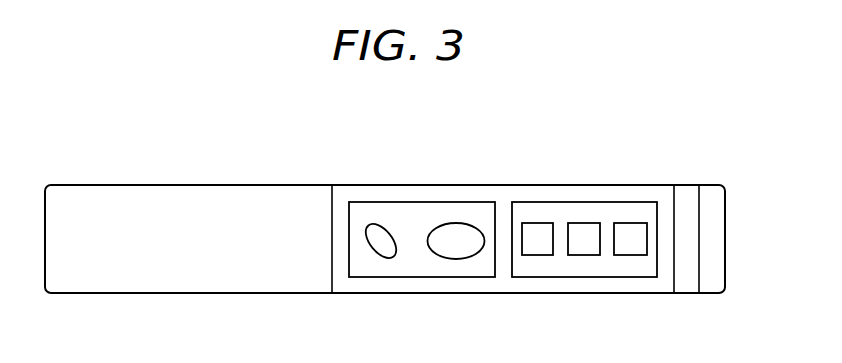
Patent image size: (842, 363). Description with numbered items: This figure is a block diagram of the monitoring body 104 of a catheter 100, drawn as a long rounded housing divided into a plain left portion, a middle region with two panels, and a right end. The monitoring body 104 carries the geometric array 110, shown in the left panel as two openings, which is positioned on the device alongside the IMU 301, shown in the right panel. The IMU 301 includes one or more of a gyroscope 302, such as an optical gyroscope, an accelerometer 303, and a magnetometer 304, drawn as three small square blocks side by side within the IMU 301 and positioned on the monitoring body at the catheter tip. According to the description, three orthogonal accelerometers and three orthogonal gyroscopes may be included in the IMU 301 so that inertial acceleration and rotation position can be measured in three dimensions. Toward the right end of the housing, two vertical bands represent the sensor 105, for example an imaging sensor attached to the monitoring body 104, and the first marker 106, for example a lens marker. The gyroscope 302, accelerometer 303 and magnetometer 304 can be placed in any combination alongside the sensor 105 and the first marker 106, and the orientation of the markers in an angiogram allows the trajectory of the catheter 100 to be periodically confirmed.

The catheter 100 is at (188, 122).
The monitoring body 104 is at (449, 185).
The sensor 105 is at (725, 238).
The first marker 106 is at (690, 185).
The geometric array 110 is at (383, 202).
The IMU 301 is at (585, 202).
The gyroscope 302 is at (537, 255).
The accelerometer 303 is at (580, 255).
The magnetometer 304 is at (627, 255).